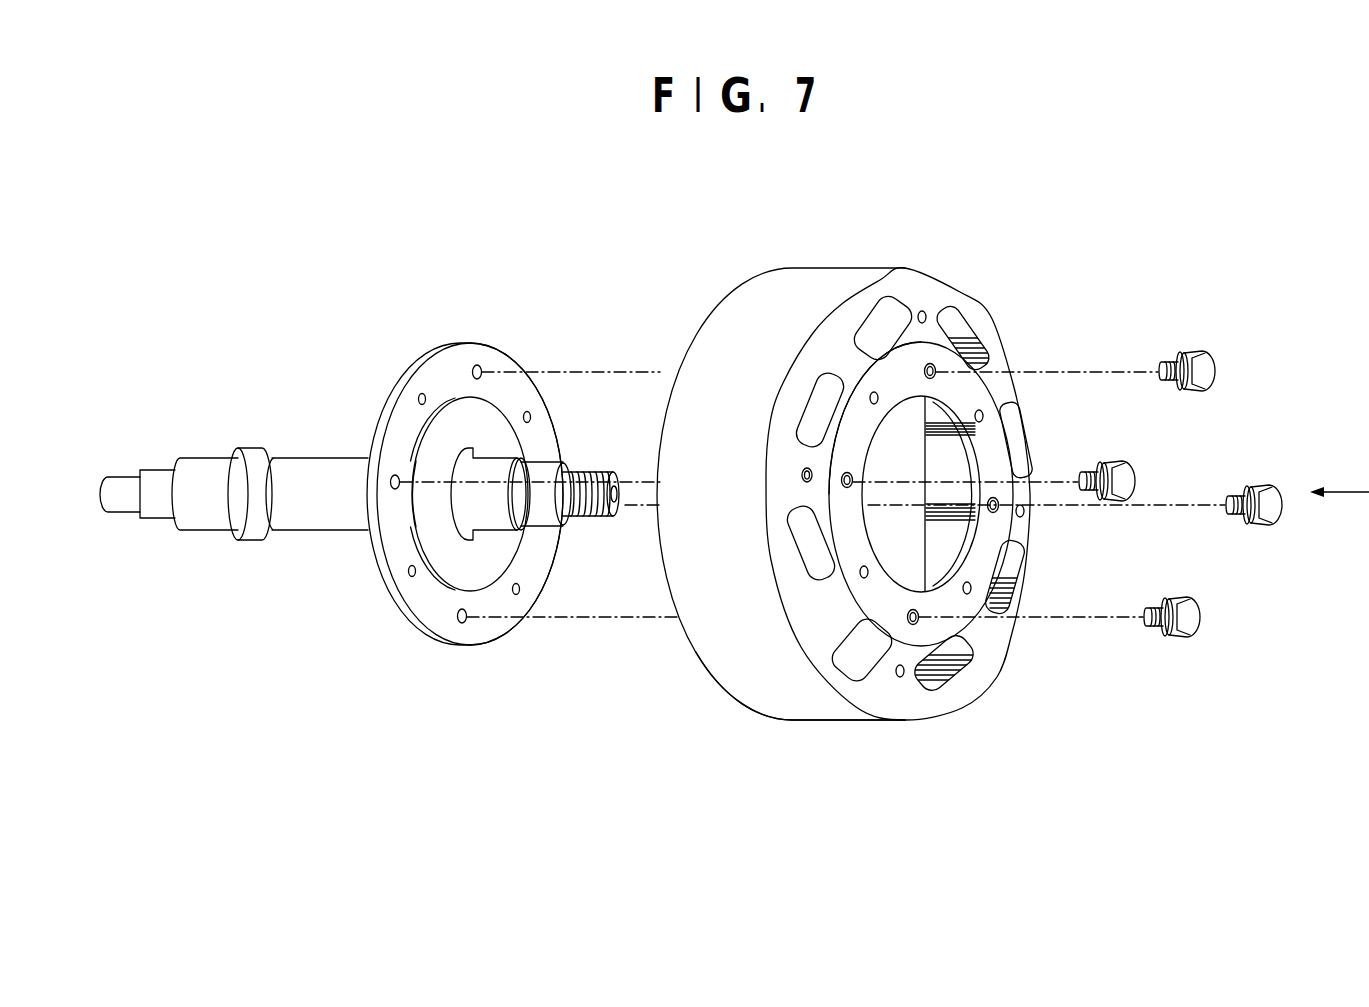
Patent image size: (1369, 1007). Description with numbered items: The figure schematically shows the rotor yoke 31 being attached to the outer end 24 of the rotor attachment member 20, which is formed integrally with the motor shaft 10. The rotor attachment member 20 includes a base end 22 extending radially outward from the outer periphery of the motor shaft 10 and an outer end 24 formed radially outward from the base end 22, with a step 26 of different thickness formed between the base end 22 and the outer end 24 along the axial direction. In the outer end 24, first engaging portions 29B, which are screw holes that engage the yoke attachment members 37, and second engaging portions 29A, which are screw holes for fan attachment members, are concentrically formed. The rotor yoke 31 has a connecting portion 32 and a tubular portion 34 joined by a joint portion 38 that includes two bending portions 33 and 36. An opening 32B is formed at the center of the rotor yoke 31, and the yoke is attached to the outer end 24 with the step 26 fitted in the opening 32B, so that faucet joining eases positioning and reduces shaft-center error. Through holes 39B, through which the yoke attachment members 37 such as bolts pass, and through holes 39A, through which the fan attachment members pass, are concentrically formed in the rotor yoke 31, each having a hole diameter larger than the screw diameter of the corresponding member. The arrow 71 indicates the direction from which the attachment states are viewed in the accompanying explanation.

The motor shaft 10 is at (208, 471).
The rotor attachment member 20 is at (378, 398).
The base end 22 is at (447, 560).
The outer end 24 is at (451, 370).
The step 26 is at (416, 533).
The second engaging portions 29A is at (423, 393).
The first engaging portions 29B is at (478, 365).
The rotor yoke 31 is at (708, 359).
The connecting portion 32 is at (872, 602).
The opening 32B is at (900, 442).
The bending portion 33 is at (830, 337).
The tubular portion 34 is at (812, 721).
The bending portion 36 is at (914, 402).
The yoke attachment members 37 is at (1132, 483).
The joint portion 38 is at (749, 190).
The through holes 39A is at (870, 394).
The through holes 39B is at (930, 363).
The arrow 71 is at (1358, 490).